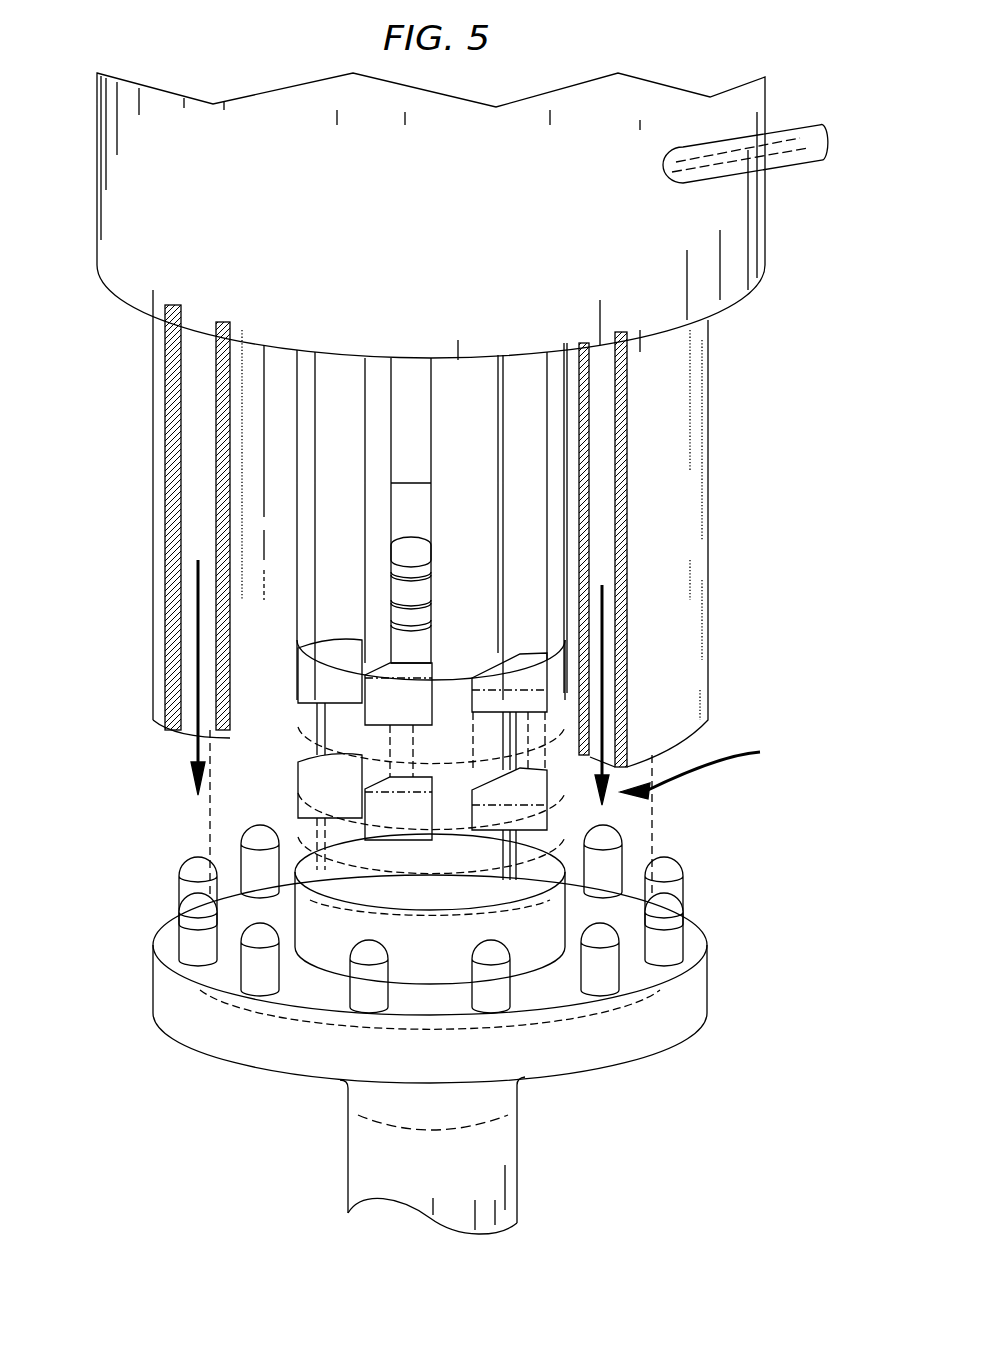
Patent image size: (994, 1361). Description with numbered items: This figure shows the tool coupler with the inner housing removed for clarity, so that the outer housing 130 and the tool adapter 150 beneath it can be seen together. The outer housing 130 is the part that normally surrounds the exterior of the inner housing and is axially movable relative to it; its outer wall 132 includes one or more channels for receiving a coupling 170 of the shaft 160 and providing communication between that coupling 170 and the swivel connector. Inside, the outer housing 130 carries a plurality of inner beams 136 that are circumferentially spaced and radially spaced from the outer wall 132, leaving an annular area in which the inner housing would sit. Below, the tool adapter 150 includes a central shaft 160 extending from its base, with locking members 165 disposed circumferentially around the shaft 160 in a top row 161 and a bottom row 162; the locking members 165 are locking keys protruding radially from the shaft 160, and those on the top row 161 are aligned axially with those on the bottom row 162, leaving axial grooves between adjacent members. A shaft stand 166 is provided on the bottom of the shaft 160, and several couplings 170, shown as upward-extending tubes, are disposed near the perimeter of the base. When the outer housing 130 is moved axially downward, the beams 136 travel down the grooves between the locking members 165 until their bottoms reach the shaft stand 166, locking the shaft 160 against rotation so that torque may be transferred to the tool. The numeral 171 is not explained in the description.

The outer housing 130 is at (710, 433).
The outer wall 132 is at (153, 415).
The inner beams 136 is at (333, 497).
The tool adapter 150 is at (605, 1068).
The central shaft 160 is at (700, 695).
The top row 161 is at (298, 690).
The bottom row 162 is at (310, 795).
The locking members 165 is at (533, 800).
The shaft stand 166 is at (330, 868).
The couplings 170 is at (668, 930).
The direction arrow 171 is at (195, 590).